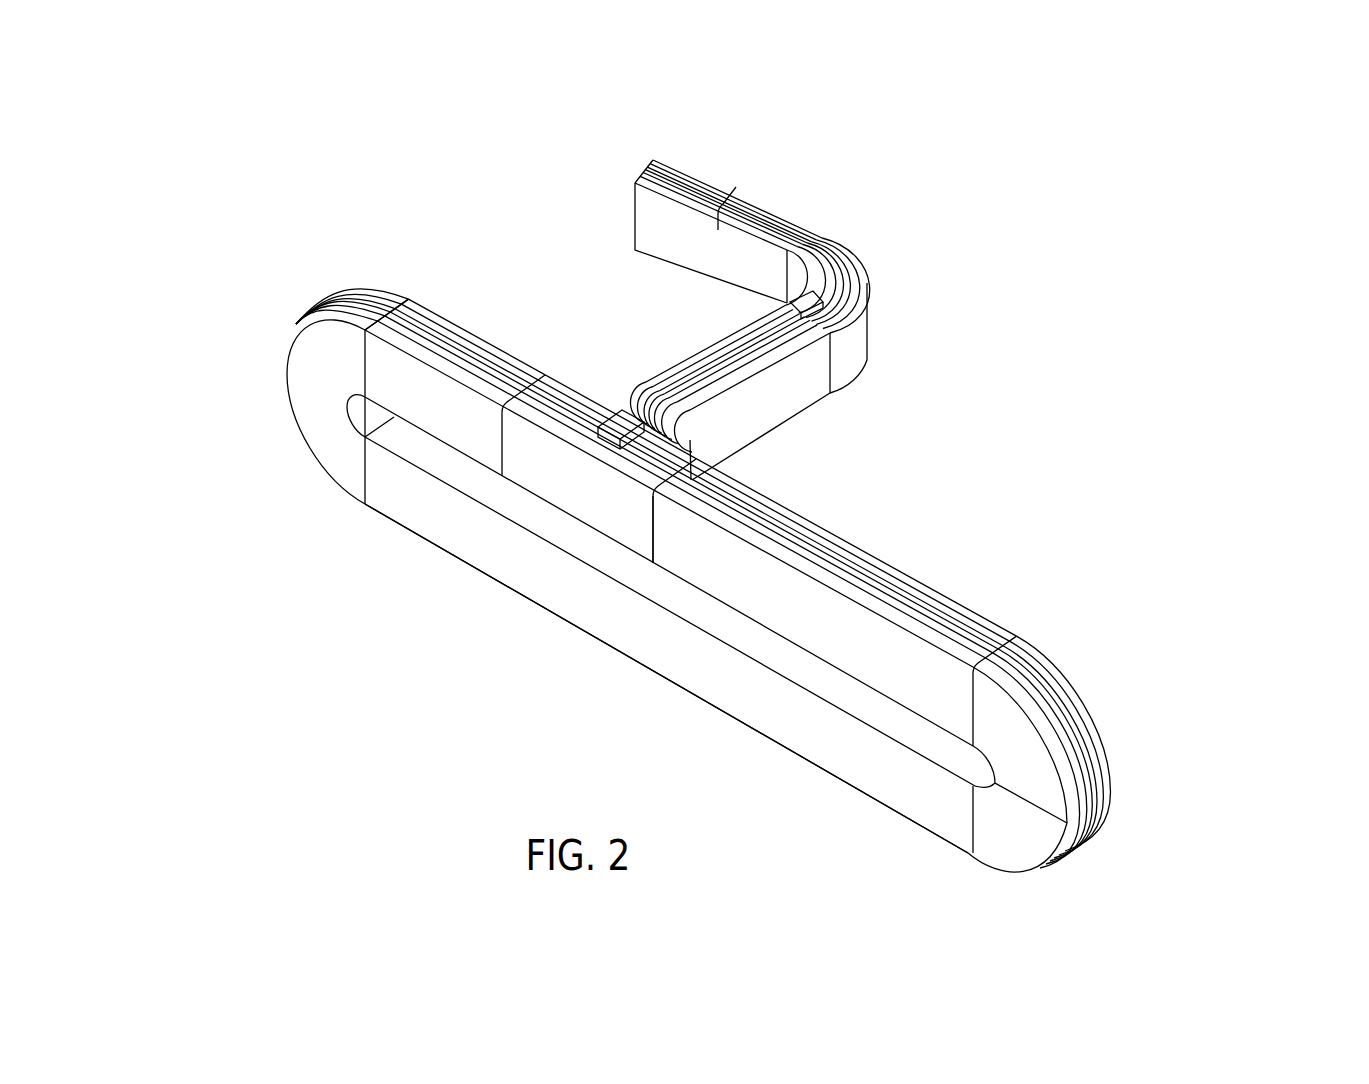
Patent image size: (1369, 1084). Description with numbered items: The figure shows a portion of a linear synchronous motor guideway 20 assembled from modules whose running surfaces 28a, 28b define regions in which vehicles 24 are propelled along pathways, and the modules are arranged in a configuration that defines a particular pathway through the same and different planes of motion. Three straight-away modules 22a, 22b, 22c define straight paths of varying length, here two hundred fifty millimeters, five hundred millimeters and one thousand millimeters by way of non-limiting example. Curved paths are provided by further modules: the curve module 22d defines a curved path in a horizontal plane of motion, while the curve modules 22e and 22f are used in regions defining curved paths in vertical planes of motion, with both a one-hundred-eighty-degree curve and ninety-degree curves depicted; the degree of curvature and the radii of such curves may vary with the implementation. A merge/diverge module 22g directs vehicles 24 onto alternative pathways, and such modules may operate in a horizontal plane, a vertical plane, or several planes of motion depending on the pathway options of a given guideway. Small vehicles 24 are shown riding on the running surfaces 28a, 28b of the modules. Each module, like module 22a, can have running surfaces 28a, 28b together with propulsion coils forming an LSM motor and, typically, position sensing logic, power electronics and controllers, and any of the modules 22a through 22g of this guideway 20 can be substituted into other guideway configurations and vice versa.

The LSM guideway 20 is at (285, 467).
The straight-away module 22a is at (909, 549).
The straight-away module 22b is at (452, 291).
The straight-away module 22c is at (481, 595).
The curved module 22d is at (890, 266).
The curved module 22e is at (243, 325).
The curved module 22f is at (1132, 713).
The merge/diverge module 22g is at (606, 384).
The vehicle 24 is at (632, 410).
The running surface 28a is at (718, 197).
The running surface 28b is at (776, 767).